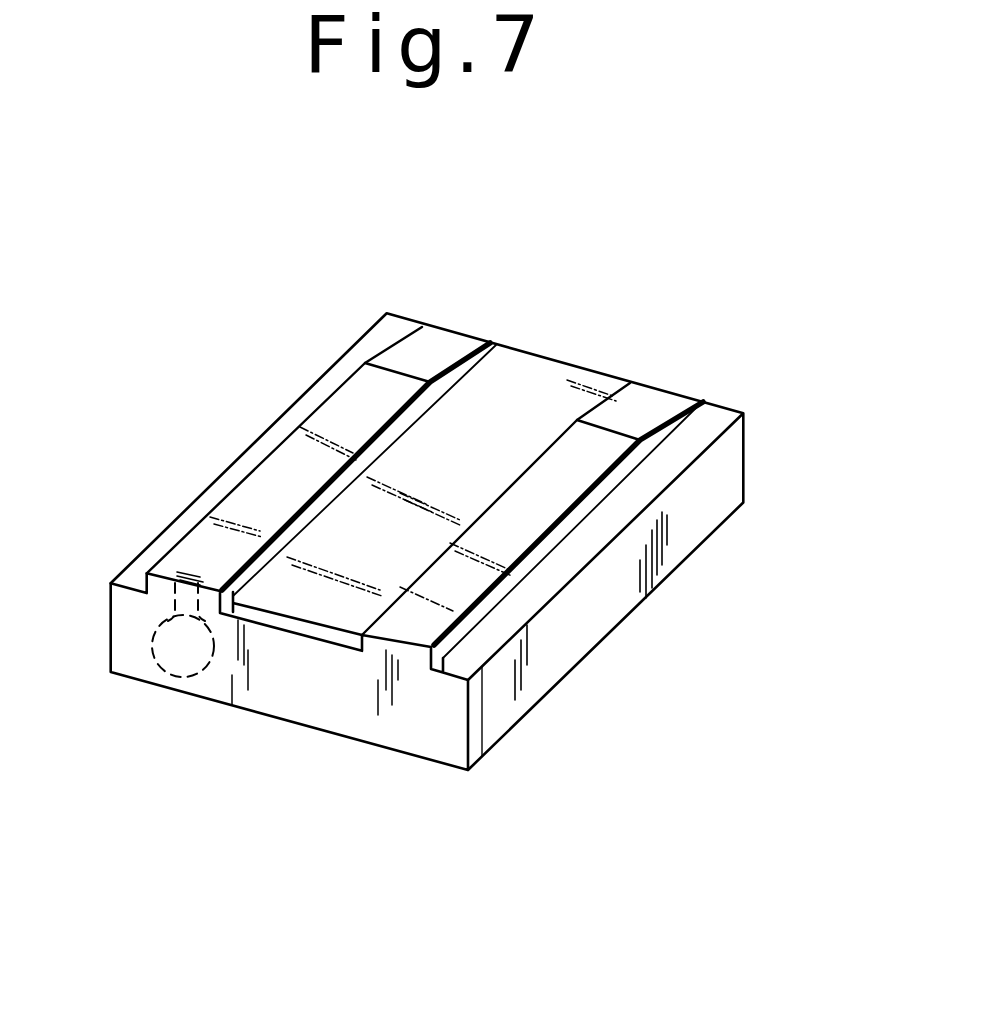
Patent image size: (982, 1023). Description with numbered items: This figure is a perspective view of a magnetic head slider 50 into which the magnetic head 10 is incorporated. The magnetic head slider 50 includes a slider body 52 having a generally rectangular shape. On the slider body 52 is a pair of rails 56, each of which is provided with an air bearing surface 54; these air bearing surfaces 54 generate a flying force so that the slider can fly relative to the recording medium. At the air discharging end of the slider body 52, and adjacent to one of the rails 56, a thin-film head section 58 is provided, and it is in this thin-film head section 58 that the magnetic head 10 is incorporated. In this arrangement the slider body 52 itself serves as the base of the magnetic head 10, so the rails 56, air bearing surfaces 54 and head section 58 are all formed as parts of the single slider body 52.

The magnetic head 10 is at (166, 666).
The magnetic head slider 50 is at (300, 324).
The slider body 52 is at (603, 611).
The air bearing surfaces 54 is at (377, 402).
The rails 56 is at (260, 490).
The thin-film head section 58 is at (423, 737).